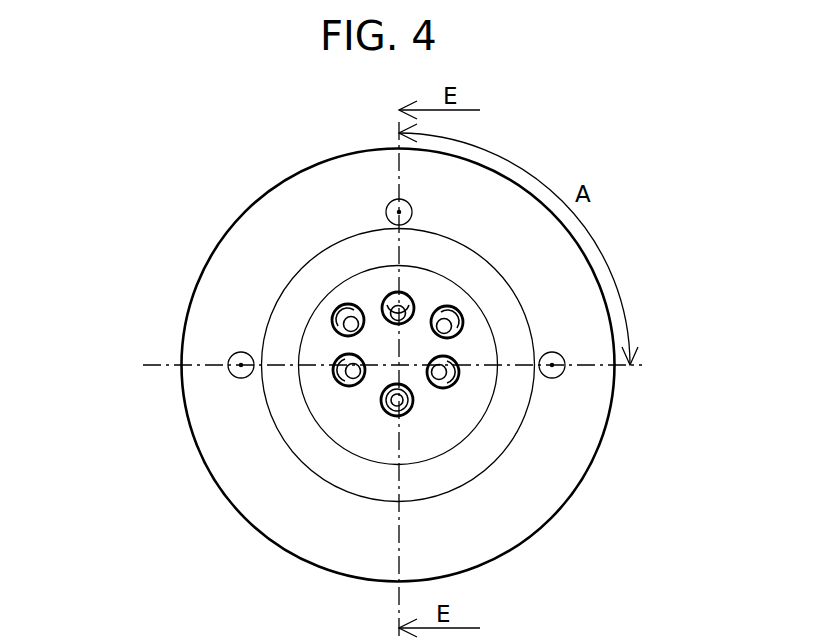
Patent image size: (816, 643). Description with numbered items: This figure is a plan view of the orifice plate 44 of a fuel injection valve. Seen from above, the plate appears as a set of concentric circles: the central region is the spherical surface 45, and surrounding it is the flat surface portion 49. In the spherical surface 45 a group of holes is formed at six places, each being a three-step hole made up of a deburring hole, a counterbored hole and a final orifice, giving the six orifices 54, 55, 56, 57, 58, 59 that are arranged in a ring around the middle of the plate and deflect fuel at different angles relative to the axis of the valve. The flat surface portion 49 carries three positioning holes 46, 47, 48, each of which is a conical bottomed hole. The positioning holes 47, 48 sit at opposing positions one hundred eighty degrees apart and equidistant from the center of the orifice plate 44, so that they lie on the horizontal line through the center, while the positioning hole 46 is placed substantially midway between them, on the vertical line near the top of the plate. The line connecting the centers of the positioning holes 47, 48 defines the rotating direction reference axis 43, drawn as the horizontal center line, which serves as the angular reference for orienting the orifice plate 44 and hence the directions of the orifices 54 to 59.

The rotating direction reference axis 43 is at (160, 360).
The orifice plate 44 is at (563, 440).
The spherical surface 45 is at (445, 427).
The positioning hole 46 is at (392, 203).
The positioning hole 47 is at (563, 372).
The positioning hole 48 is at (232, 355).
The flat surface portion 49 is at (255, 498).
The orifice 54 is at (408, 295).
The orifice 55 is at (458, 312).
The orifice 56 is at (457, 385).
The orifice 57 is at (383, 415).
The orifice 58 is at (335, 378).
The orifice 59 is at (334, 312).